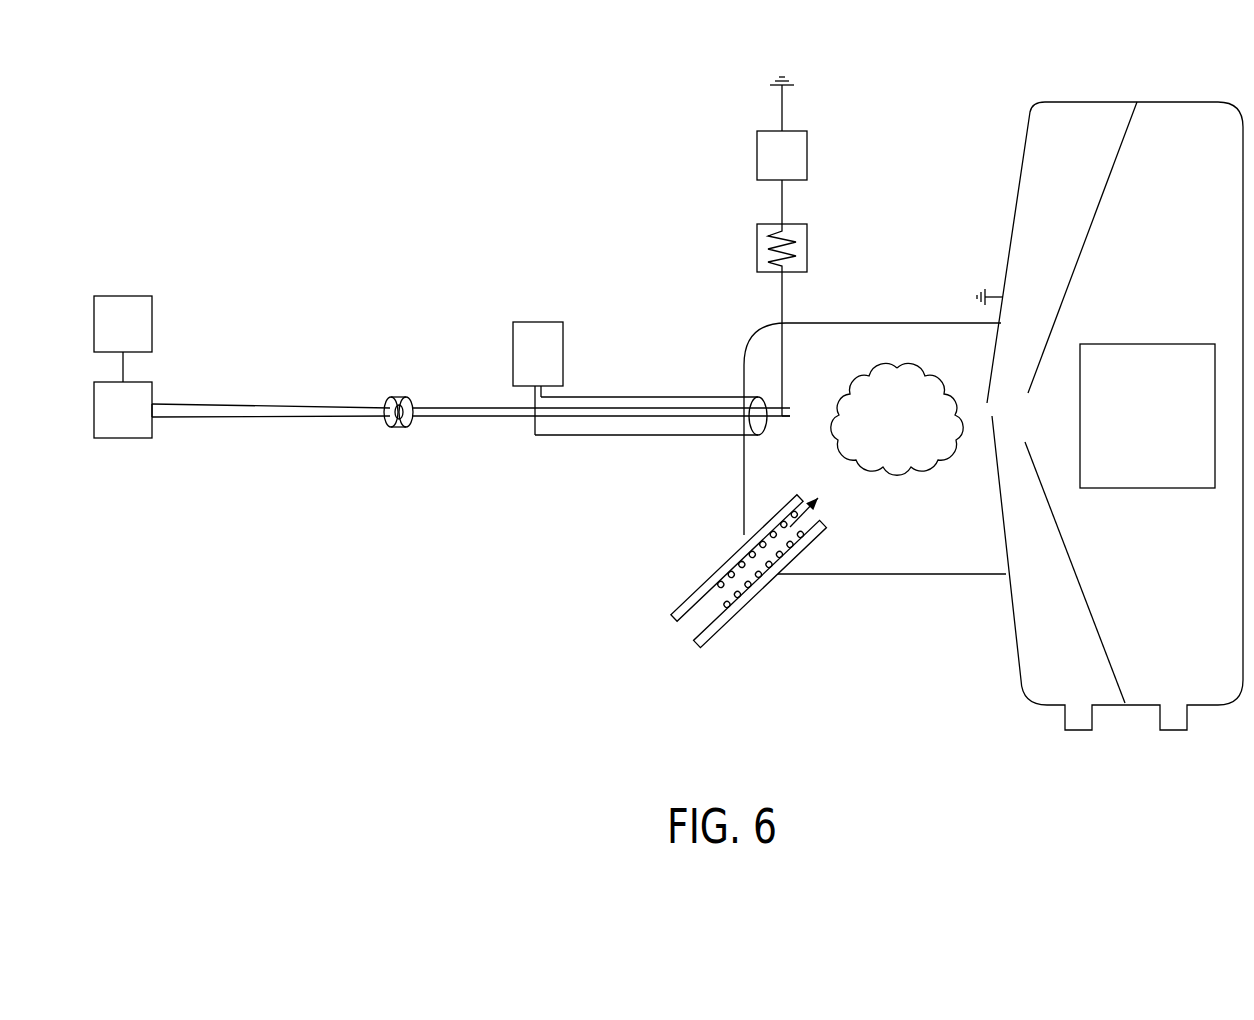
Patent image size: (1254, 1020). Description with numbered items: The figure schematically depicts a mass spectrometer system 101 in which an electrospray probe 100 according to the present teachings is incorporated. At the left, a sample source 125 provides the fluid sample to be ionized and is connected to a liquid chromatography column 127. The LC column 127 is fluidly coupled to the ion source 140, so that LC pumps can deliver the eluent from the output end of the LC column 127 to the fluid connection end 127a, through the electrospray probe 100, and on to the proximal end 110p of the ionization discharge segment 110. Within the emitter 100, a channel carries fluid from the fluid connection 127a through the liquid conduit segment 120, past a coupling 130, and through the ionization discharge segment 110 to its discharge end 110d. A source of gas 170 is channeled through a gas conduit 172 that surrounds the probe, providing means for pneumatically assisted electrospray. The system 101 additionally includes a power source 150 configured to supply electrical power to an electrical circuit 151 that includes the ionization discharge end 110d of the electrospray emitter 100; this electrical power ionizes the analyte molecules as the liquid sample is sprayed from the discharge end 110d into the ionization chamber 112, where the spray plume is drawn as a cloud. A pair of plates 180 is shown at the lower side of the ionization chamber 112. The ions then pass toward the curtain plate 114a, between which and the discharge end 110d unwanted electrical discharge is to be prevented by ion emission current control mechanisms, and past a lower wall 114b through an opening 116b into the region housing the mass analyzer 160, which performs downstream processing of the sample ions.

The mass spectrometer system 101 is at (228, 137).
The sample source 125 is at (105, 340).
The liquid chromatography column 127 is at (105, 427).
The fluid connection end 127a is at (160, 423).
The liquid conduit segment 120 is at (228, 420).
The coupling 130 is at (405, 433).
The electrospray probe 100 is at (380, 374).
The proximal end of ionizing discharge segment 110p is at (470, 421).
The source of gas 170 is at (520, 366).
The gas conduit 172 is at (632, 440).
The ion source 140 is at (637, 375).
The ionization discharge segment 110 is at (697, 407).
The discharge end of ionization discharge segment 110d is at (795, 411).
The power source 150 is at (764, 169).
The electrical circuit 151 is at (756, 249).
The ionization chamber 112 is at (946, 330).
The electrode plates 180 is at (746, 602).
The curtain plate 114a is at (1010, 203).
The lower wall of vessel 114b is at (991, 424).
The vessel opening 116b is at (1017, 434).
The mass analyzer 160 is at (1131, 434).